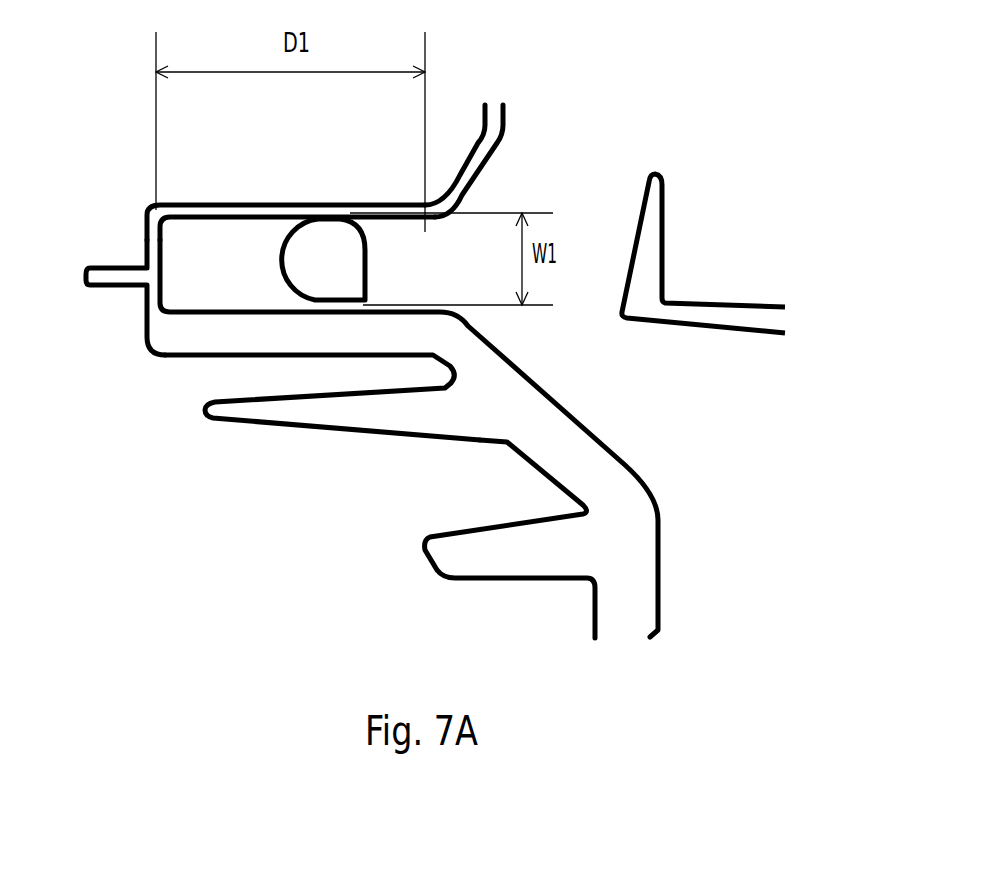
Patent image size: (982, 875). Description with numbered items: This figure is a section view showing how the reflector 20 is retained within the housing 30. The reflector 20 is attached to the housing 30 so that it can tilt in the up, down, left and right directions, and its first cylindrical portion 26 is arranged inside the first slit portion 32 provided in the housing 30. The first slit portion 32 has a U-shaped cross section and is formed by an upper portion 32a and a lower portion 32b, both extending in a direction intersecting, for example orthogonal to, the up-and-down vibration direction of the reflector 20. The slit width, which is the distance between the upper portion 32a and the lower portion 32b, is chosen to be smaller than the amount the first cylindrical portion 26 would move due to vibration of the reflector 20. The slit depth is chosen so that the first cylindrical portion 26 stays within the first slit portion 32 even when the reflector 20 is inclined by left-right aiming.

The reflector 20 is at (748, 303).
The first cylindrical portion 26 is at (323, 240).
The housing 30 is at (495, 117).
The first slit portion 32 is at (372, 383).
The upper portion 32a is at (188, 205).
The lower portion 32b is at (188, 345).